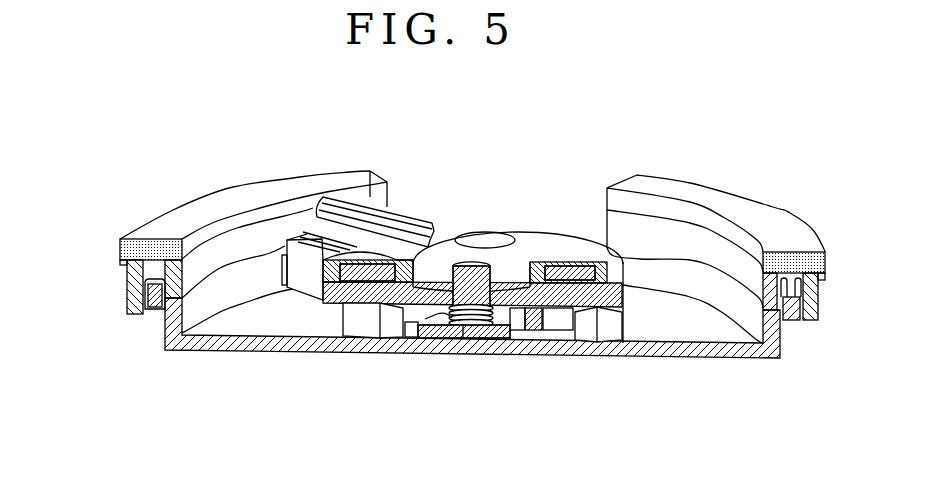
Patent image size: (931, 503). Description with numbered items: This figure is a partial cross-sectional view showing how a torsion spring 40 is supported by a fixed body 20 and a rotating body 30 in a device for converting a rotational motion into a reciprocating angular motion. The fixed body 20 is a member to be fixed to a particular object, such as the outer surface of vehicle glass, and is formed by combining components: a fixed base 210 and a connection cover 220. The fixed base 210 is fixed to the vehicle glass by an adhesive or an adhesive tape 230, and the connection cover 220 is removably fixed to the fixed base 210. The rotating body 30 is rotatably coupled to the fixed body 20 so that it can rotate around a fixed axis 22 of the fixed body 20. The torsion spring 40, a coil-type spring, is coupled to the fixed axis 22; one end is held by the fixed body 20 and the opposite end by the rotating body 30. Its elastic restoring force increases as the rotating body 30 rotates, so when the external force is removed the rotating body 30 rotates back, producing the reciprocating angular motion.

The fixed body 20 is at (240, 337).
The fixed axis 22 is at (480, 265).
The rotating body 30 is at (330, 293).
The torsion spring 40 is at (462, 323).
The fixed base 210 is at (127, 280).
The connection cover 220 is at (267, 310).
The adhesive tape 230 is at (140, 248).